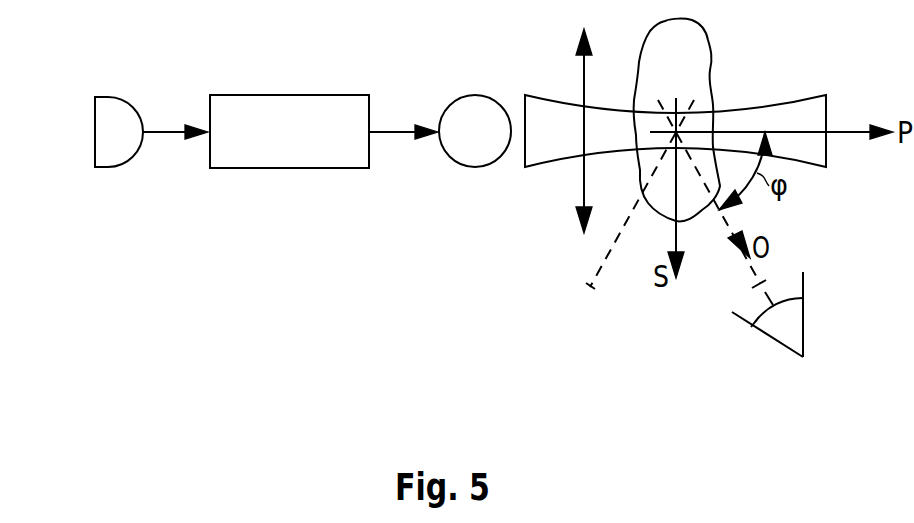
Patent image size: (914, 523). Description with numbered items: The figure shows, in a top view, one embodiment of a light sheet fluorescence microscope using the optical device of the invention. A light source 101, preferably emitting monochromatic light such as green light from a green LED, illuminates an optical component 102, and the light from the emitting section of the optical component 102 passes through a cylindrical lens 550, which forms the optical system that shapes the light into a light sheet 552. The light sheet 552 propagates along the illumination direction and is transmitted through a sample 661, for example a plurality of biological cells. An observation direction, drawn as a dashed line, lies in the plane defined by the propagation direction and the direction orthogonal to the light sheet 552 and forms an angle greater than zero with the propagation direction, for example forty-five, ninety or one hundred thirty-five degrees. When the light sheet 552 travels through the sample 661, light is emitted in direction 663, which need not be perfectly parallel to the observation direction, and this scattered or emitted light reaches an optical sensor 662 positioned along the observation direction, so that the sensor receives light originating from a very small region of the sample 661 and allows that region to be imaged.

The light source 101 is at (95, 117).
The optical component 102 is at (301, 95).
The cylindrical lens 550 is at (466, 104).
The light sheet 552 is at (800, 110).
The sample 661 is at (703, 53).
The optical sensor 662 is at (803, 328).
The direction of emitted light 663 is at (755, 275).